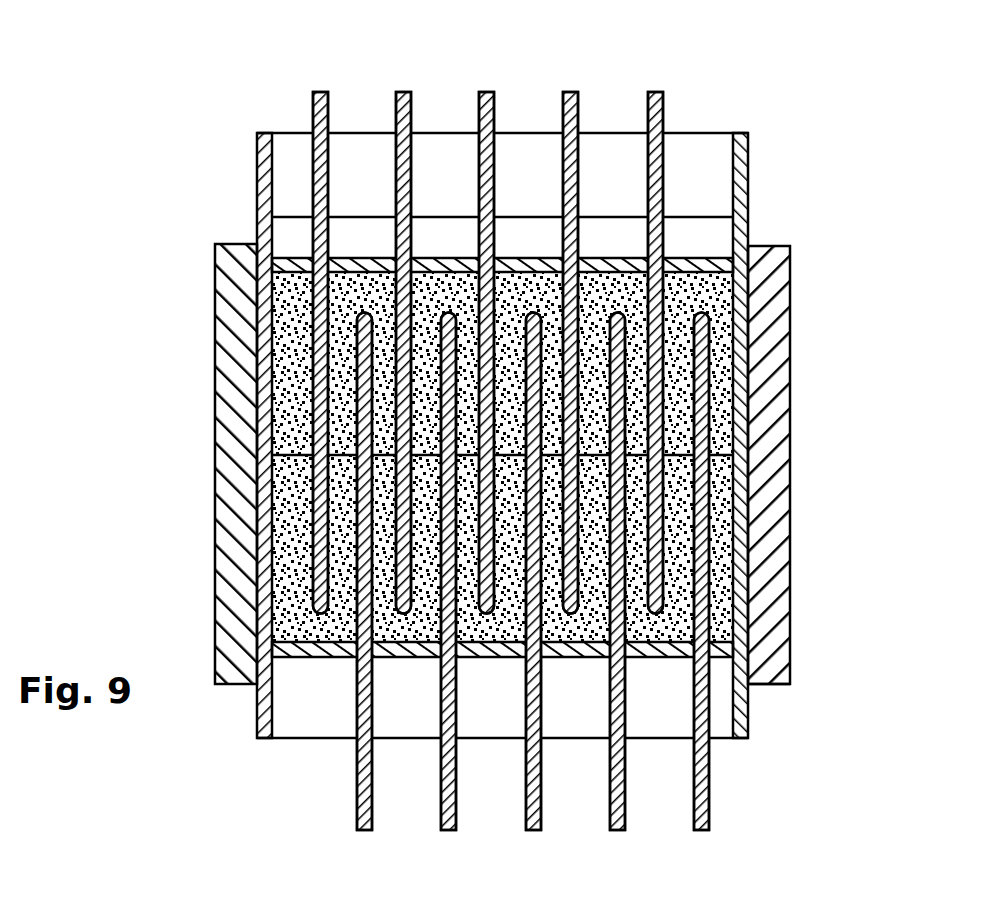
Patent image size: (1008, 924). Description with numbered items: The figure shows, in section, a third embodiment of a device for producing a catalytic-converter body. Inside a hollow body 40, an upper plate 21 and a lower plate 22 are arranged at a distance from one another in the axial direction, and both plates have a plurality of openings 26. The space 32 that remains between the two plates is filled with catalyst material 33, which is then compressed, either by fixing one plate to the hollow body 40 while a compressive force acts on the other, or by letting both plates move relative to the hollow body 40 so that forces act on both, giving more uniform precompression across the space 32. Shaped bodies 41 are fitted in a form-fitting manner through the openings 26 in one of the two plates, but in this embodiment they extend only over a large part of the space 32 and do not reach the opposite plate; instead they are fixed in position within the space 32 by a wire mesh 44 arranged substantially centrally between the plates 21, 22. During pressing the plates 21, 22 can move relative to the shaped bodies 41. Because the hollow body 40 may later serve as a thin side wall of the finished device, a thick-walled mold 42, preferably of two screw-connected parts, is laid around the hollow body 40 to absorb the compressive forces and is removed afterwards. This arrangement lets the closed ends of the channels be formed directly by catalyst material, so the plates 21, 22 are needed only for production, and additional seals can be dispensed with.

The upper plate 21 is at (715, 259).
The lower plate 22 is at (790, 685).
The openings 26 is at (352, 657).
The space 32 is at (288, 472).
The catalyst material 33 is at (303, 562).
The hollow body 40 is at (752, 725).
The shaped bodies 41 is at (565, 93).
The thick-walled mold 42 is at (257, 178).
The wire mesh 44 is at (780, 417).